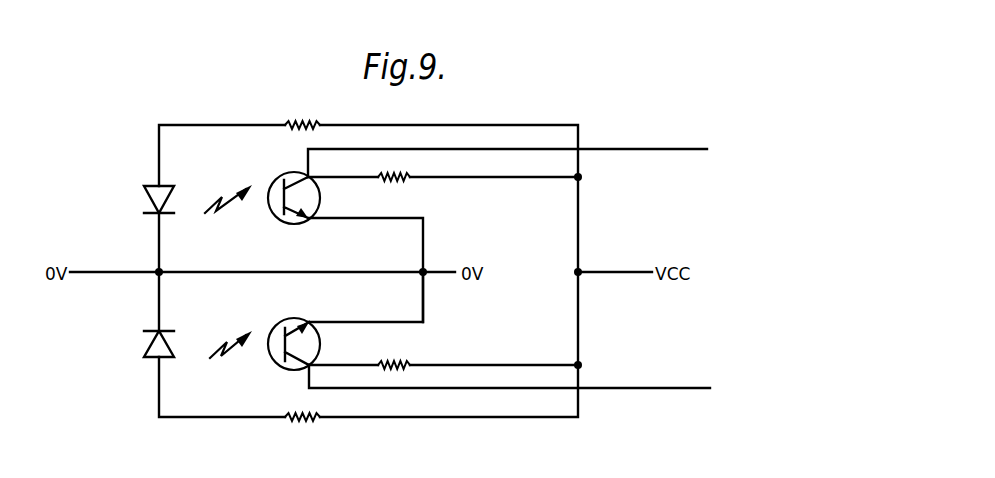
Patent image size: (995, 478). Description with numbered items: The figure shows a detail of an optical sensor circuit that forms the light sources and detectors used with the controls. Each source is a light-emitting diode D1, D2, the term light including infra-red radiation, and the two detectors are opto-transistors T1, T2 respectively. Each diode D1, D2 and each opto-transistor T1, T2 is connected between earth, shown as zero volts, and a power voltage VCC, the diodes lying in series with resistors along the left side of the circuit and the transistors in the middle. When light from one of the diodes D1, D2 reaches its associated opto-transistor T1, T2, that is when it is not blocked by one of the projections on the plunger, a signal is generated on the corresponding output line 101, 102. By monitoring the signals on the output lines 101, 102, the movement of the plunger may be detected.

The output line 101 is at (652, 145).
The output line 102 is at (648, 384).
The light-emitting diode D1 is at (136, 199).
The light-emitting diode D2 is at (137, 345).
The opto-transistor T1 is at (262, 190).
The opto-transistor T2 is at (265, 351).